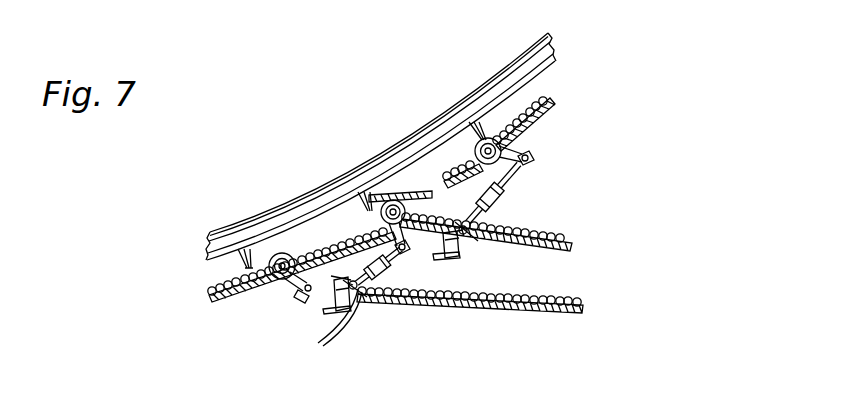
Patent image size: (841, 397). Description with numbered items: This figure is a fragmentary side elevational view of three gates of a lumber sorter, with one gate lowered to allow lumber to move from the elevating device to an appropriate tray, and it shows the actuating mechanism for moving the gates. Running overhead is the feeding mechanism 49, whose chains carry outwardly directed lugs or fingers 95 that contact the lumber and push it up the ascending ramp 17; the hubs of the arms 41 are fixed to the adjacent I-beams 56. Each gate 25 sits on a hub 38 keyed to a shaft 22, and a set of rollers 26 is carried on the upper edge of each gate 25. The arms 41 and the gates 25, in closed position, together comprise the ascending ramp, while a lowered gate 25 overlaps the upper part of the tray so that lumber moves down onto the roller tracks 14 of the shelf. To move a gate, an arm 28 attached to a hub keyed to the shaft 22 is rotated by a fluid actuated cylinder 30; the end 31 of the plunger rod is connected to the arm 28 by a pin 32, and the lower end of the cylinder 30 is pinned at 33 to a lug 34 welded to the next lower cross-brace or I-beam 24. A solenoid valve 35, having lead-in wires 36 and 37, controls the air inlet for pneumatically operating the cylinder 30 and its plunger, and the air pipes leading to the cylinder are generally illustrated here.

The roller tracks 14 is at (499, 294).
The ascending ramp 17 is at (226, 299).
The shaft 22 is at (275, 280).
The I-beam 24 is at (326, 311).
The gate 25 is at (523, 135).
The rollers 26 is at (517, 117).
The arm 28 is at (291, 283).
The fluid actuated cylinder 30 is at (499, 200).
The end of the plunger rod 31 is at (295, 302).
The pin 32 is at (308, 293).
The pin 33 is at (353, 280).
The lug 34 is at (451, 257).
The solenoid valve 35 is at (351, 306).
The lead-in wire 36 is at (346, 323).
The lead-in wire 37 is at (325, 335).
The hub 38 is at (284, 255).
The arms 41 is at (362, 222).
The feeding mechanism 49 is at (277, 207).
The I-beam 56 is at (375, 156).
The lugs 95 is at (247, 256).